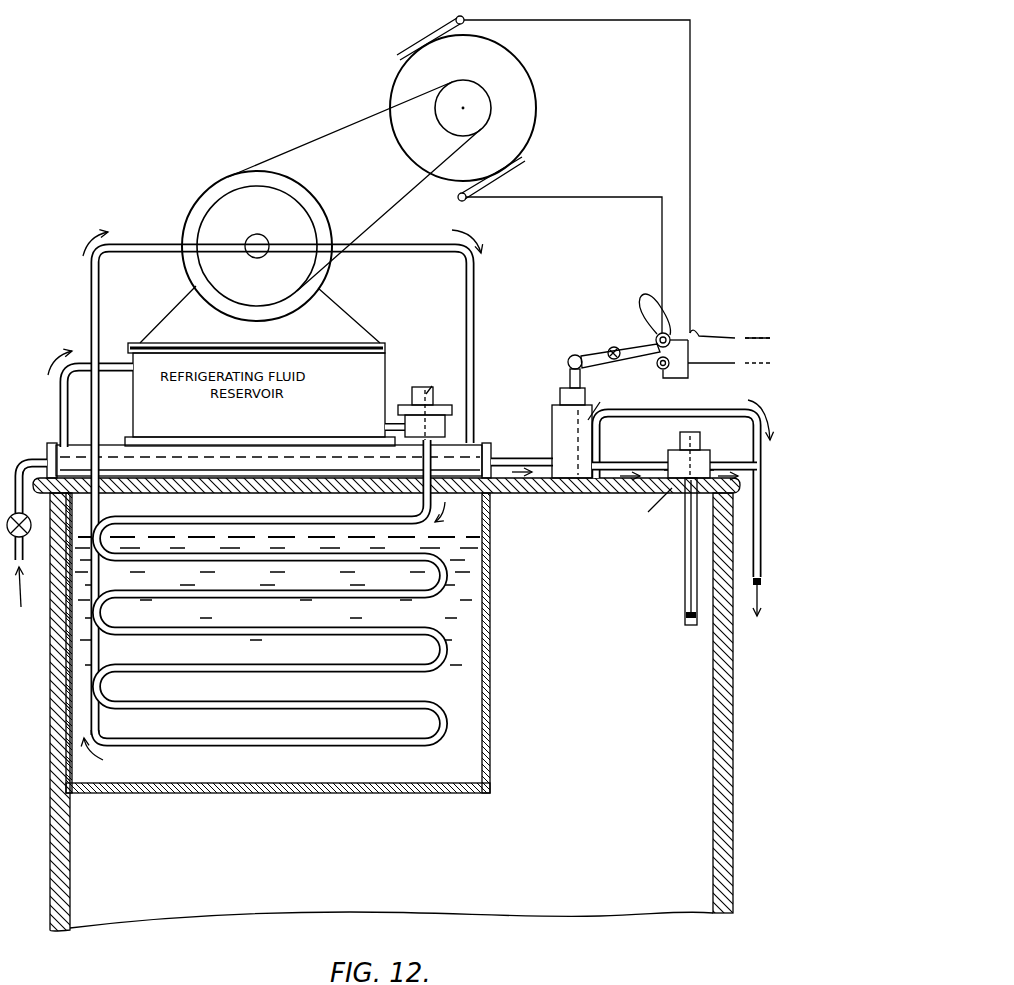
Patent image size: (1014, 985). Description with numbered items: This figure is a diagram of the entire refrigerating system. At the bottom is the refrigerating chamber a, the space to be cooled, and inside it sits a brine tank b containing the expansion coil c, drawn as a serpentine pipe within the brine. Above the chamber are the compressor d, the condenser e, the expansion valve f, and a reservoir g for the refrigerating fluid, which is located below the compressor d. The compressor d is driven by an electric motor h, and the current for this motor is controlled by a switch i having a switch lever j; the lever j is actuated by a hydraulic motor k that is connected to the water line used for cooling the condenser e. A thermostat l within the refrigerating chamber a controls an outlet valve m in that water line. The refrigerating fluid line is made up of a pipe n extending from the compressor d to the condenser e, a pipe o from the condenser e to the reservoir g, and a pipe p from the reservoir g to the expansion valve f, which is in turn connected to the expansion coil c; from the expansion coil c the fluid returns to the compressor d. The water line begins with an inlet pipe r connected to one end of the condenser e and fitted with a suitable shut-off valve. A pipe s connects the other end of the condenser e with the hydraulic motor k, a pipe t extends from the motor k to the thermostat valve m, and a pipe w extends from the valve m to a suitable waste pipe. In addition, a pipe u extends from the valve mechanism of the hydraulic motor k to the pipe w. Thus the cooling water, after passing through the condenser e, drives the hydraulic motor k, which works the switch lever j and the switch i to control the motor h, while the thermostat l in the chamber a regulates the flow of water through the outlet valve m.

The refrigerating chamber a is at (386, 704).
The brine tank b is at (381, 782).
The expansion coil c is at (370, 640).
The compressor d is at (192, 212).
The condenser e is at (170, 455).
The expansion valve f is at (455, 394).
The reservoir for the refrigerating fluid g is at (90, 306).
The electric motor h is at (537, 95).
The switch i is at (656, 360).
The switch lever j is at (588, 354).
The hydraulic motor k is at (632, 433).
The thermostat l is at (684, 578).
The outlet valve m is at (626, 481).
The pipe from compressor to condenser n is at (477, 300).
The pipe from condenser to reservoir o is at (112, 360).
The pipe from reservoir to expansion valve p is at (393, 418).
The inlet pipe r is at (30, 462).
The pipe connecting condenser with hydraulic motor s is at (520, 462).
The pipe from motor to thermostat valve t is at (638, 462).
The pipe from hydraulic motor valve mechanism to waste pipe u is at (676, 414).
The pipe from valve to waste pipe w is at (764, 492).